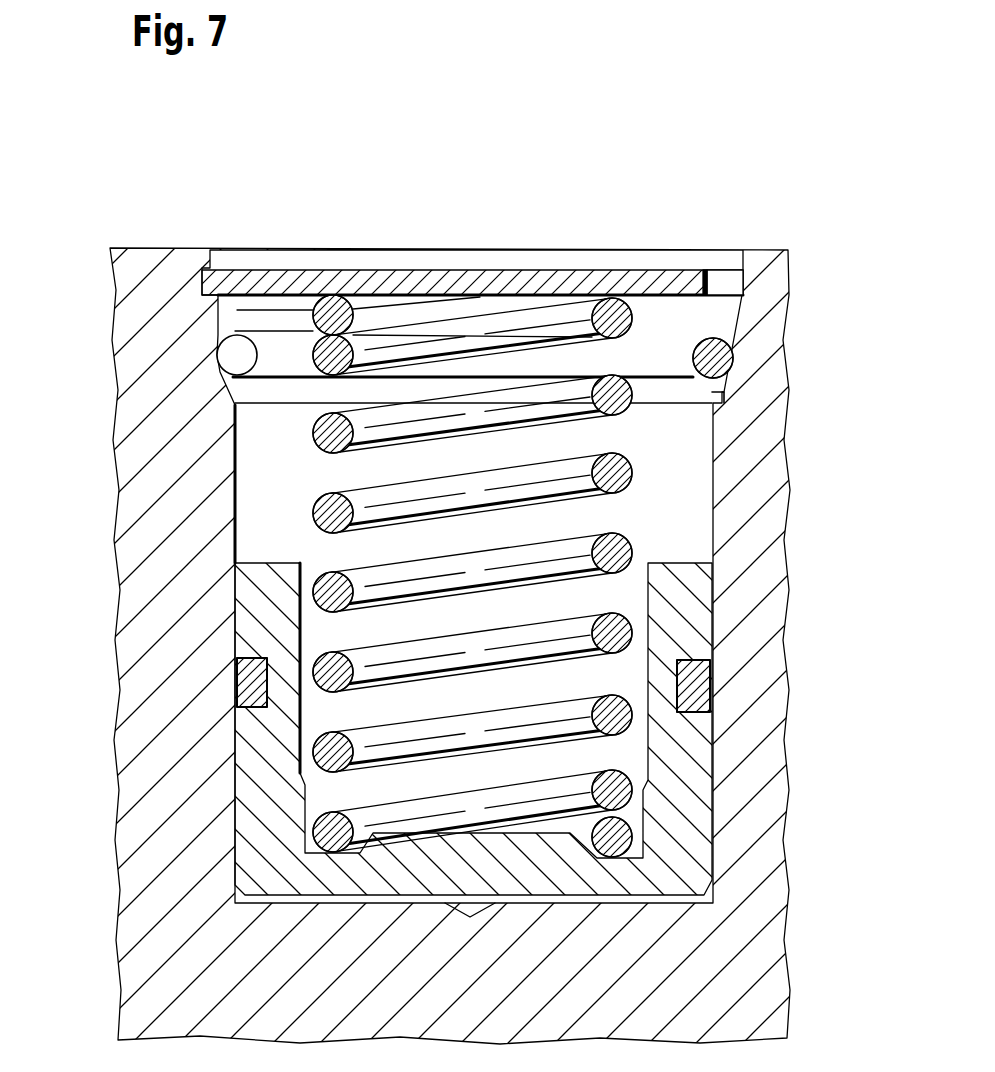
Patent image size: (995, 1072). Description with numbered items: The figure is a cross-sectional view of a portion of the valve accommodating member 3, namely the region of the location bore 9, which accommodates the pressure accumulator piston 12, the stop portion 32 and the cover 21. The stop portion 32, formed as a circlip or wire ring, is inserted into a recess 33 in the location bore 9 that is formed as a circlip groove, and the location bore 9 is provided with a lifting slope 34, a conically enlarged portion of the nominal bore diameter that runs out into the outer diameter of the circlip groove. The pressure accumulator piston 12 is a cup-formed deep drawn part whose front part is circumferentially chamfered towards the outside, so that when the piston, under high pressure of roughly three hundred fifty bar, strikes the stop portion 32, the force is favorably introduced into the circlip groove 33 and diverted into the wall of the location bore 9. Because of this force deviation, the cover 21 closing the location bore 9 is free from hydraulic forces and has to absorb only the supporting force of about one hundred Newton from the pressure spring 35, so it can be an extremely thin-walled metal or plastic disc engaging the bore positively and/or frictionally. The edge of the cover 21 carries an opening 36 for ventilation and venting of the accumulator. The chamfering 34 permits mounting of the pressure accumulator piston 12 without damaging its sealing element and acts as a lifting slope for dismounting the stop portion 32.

The valve accommodating member 3 is at (747, 718).
The location bore 9 is at (236, 490).
The pressure accumulator piston 12 is at (673, 595).
The cover 21 is at (547, 282).
The stop portion 32 is at (670, 347).
The recess (circlip groove) 33 is at (210, 355).
The lifting slope (chamfering) 34 is at (714, 396).
The pressure spring 35 is at (300, 754).
The opening 36 is at (723, 284).